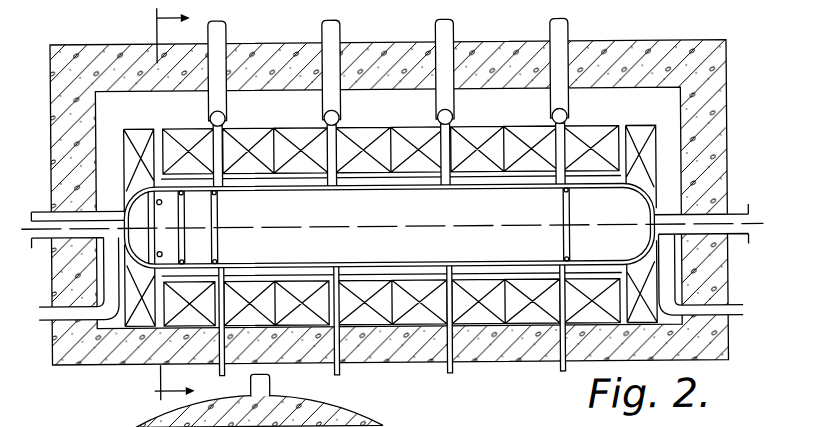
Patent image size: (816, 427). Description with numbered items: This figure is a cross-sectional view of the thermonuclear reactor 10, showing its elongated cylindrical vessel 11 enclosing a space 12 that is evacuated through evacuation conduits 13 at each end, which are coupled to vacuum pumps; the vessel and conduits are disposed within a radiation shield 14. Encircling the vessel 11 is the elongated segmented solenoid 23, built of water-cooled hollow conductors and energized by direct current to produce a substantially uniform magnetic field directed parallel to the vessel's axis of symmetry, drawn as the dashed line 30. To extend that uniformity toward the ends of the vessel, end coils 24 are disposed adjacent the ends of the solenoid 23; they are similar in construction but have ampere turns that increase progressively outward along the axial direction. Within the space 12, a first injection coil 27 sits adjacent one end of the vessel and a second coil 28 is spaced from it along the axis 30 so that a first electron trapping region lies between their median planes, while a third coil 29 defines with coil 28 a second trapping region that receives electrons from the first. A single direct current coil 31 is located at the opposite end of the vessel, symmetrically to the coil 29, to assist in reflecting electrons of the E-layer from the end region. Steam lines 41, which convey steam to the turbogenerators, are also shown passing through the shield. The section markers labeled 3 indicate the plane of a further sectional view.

The thermonuclear reactor 10 is at (666, 40).
The radiation shield 14 is at (727, 148).
The evacuation conduits 13 is at (40, 238).
The cylindrical vessel 11 is at (327, 192).
The space 12 is at (427, 220).
The segmented solenoid 23 is at (285, 130).
The end coils 24 is at (143, 130).
The first injection coil 27 is at (150, 238).
The second injection coil 28 is at (181, 216).
The third coil 29 is at (219, 250).
The axis of symmetry 30 is at (417, 233).
The direct current coil 31 is at (560, 242).
The steam lines 41 is at (455, 26).
The section line 3- 3 is at (173, 204).